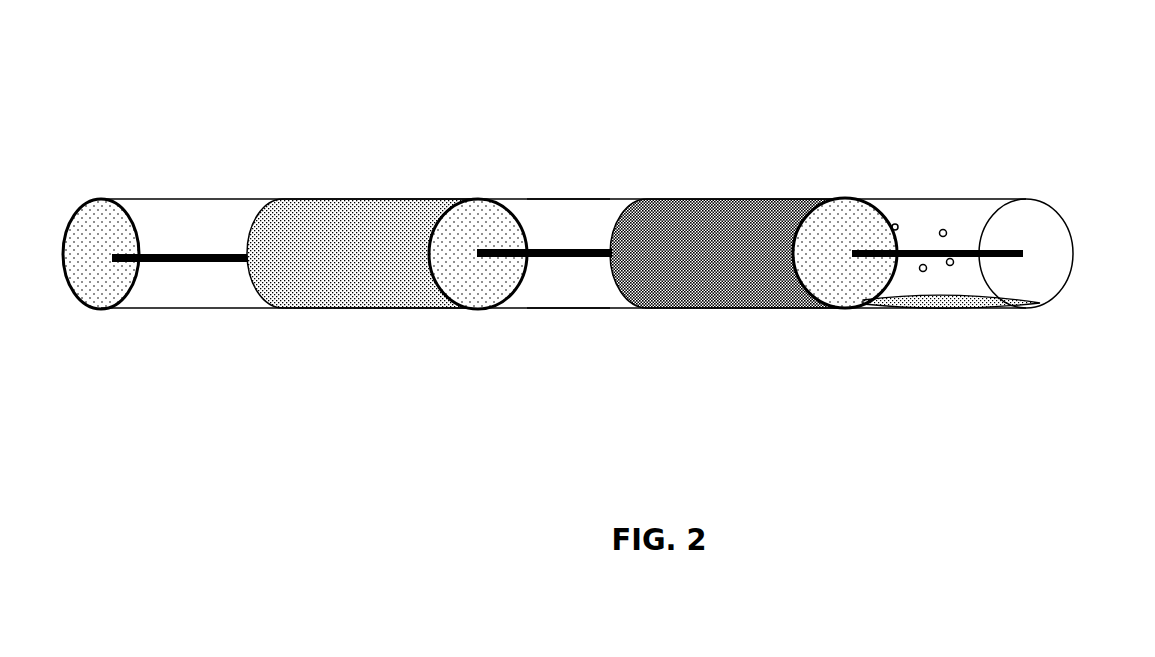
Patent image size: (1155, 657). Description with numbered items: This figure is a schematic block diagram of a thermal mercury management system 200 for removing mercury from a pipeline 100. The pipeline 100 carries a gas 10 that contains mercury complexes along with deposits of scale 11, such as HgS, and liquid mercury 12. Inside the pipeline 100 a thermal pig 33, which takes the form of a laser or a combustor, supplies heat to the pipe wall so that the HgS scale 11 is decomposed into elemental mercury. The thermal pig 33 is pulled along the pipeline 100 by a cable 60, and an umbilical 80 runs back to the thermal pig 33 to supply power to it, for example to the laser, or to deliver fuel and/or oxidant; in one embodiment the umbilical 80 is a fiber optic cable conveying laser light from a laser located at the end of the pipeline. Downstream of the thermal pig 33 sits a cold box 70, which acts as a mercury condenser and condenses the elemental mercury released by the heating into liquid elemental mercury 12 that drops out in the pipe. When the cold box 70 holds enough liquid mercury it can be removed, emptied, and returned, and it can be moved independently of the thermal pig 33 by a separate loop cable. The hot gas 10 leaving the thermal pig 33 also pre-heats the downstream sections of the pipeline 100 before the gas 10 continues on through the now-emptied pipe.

The gas 10 is at (963, 138).
The thermal pig 33 is at (343, 252).
The pipeline 100 is at (553, 227).
The scale 11 is at (893, 225).
The cable 60 is at (587, 257).
The umbilical 80 is at (195, 262).
The cold box 70 is at (741, 272).
The liquid mercury 12 is at (928, 308).
The pipe cleaning system 200 is at (342, 505).